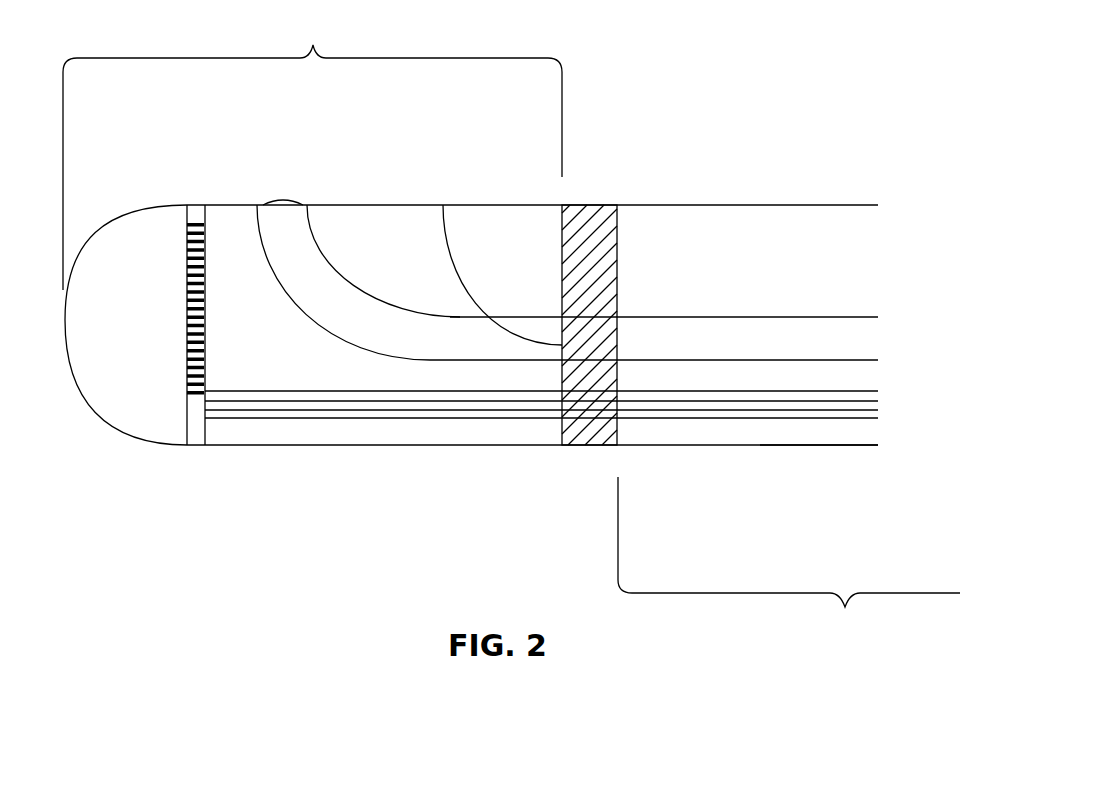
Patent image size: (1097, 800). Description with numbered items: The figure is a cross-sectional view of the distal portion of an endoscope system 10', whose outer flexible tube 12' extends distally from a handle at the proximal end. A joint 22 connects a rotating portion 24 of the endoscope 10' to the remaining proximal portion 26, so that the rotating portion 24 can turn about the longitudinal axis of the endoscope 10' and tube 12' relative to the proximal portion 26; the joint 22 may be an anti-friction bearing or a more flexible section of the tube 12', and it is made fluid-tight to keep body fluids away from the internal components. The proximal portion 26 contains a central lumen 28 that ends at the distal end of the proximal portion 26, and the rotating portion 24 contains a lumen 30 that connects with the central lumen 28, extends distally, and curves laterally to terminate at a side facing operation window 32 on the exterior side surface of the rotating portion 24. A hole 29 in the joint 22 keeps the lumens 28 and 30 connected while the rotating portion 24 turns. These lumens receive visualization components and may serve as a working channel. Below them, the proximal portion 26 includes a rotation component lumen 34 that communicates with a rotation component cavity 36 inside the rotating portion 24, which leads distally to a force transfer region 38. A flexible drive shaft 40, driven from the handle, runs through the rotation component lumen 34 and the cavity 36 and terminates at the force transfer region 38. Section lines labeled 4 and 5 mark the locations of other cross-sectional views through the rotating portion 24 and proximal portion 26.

The endoscope system 10' is at (532, 505).
The outer flexible tube 12' is at (471, 277).
The joint 22 is at (590, 205).
The rotating portion 24 is at (312, 146).
The proximal portion 26 is at (789, 566).
The central lumen 28 is at (843, 328).
The hole 29 is at (443, 205).
The lumen 30 is at (448, 353).
The operation window 32 is at (283, 203).
The rotation component lumen 34 is at (851, 430).
The rotation component cavity 36 is at (245, 420).
The force transfer region 38 is at (185, 340).
The flexible drive shaft 40 is at (317, 412).
The section line 4 is at (493, 205).
The section line 5 is at (685, 206).